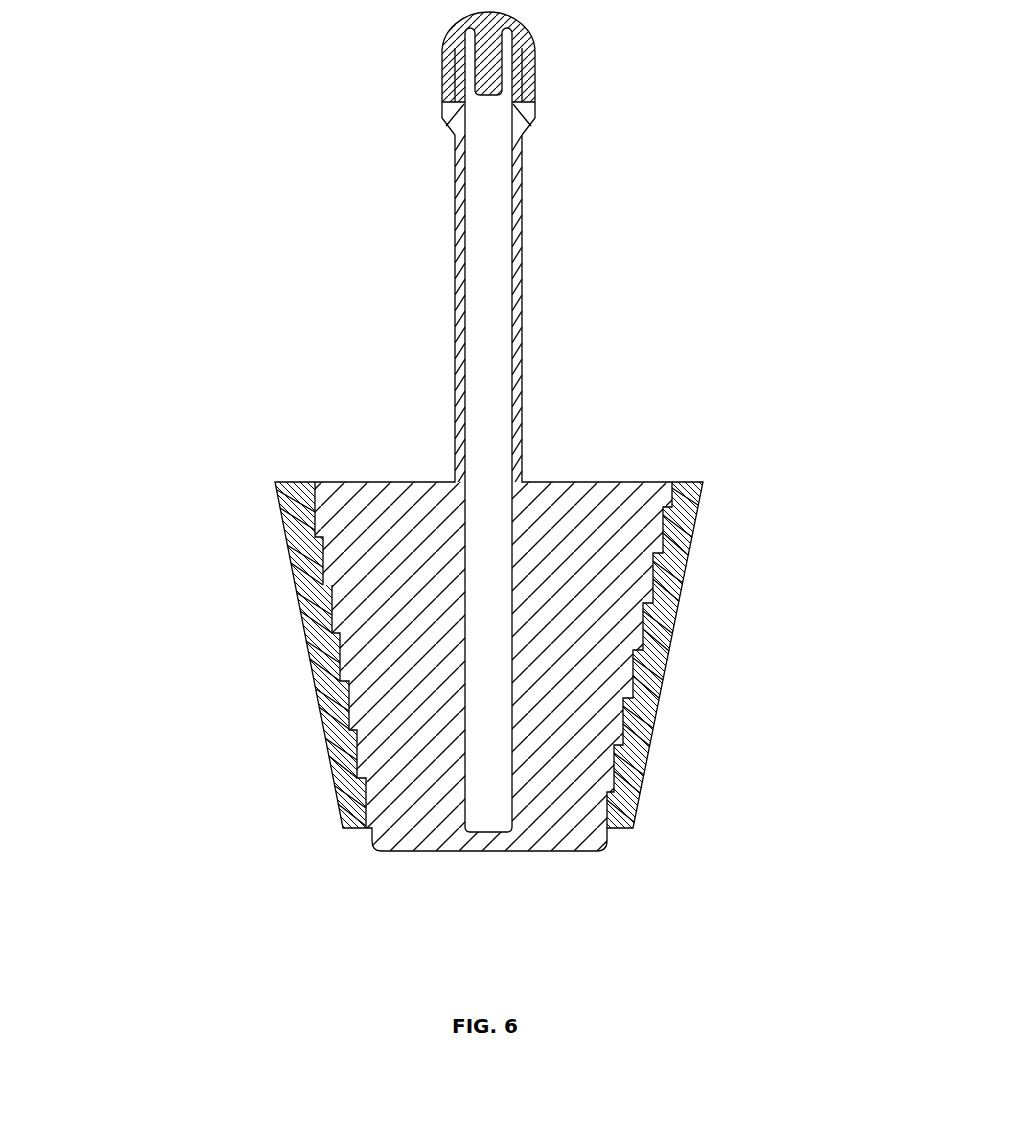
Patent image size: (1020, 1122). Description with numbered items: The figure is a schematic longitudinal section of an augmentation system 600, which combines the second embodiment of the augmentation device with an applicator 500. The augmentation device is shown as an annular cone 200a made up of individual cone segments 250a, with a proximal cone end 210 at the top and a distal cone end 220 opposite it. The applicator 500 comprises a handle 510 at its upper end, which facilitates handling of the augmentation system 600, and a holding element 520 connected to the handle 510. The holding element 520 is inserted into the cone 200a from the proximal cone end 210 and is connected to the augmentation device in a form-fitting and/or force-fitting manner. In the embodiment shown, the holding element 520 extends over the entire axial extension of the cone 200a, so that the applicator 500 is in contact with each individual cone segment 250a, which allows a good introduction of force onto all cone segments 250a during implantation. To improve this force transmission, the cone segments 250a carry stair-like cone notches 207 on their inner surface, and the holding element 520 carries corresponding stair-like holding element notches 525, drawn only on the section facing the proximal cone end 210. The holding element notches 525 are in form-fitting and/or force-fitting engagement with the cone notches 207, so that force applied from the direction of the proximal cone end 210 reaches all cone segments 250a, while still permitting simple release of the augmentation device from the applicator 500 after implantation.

The augmentation system 600 is at (748, 227).
The applicator 500 is at (548, 230).
The handle 510 is at (445, 62).
The holding element 520 is at (627, 482).
The holding element notches 525 is at (313, 497).
The cone notches 207 is at (310, 504).
The cone segments 250a is at (340, 805).
The cone 200a is at (687, 660).
The proximal cone end 210 is at (188, 403).
The distal cone end 220 is at (237, 880).